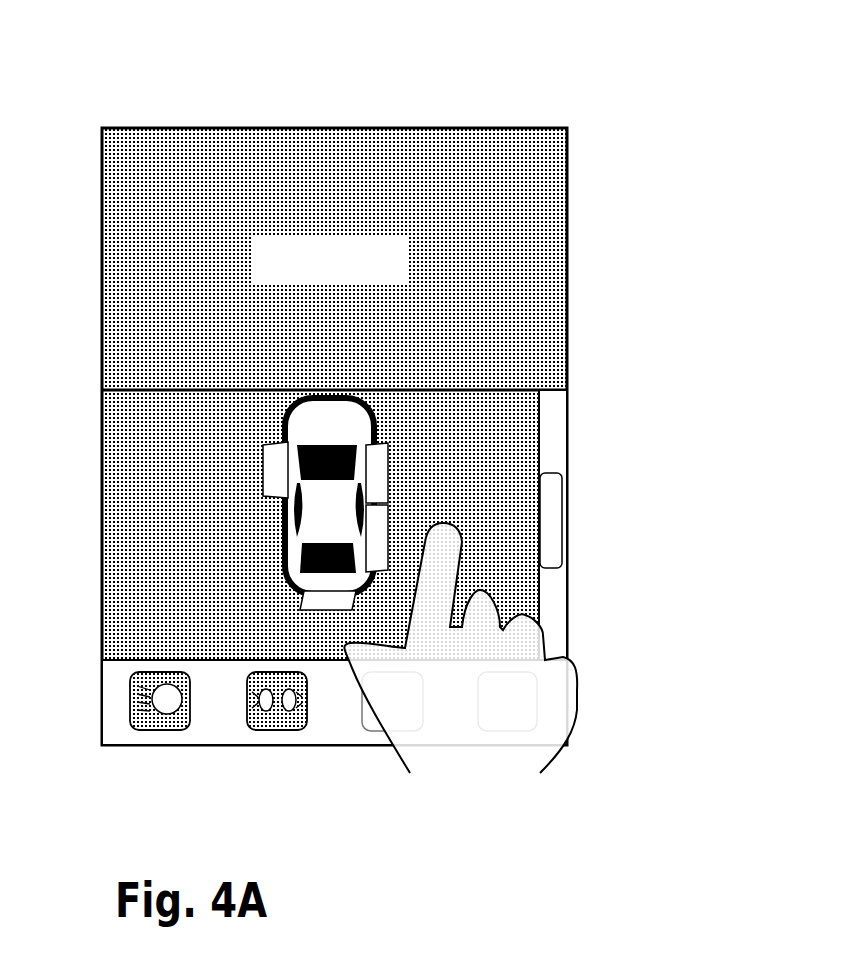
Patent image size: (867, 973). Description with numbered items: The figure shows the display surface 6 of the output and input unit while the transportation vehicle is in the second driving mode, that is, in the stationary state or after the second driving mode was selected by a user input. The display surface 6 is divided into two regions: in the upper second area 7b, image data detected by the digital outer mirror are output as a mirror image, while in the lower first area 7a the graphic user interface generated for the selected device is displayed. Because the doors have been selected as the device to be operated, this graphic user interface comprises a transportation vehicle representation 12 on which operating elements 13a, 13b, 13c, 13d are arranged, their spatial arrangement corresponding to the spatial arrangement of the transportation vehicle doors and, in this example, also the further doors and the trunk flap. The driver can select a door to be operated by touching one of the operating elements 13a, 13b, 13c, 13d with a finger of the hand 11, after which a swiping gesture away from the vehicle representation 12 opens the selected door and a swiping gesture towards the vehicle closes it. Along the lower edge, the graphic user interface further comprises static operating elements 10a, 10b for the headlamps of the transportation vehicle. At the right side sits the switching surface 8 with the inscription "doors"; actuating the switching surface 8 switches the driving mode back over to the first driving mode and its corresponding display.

The display surface 6 is at (462, 105).
The first area 7a is at (477, 412).
The second area 7b is at (215, 180).
The switching surface 8 is at (556, 558).
The static operating element 10a is at (165, 723).
The static operating element 10b is at (268, 722).
The hand 11 is at (465, 647).
The transportation vehicle representation 12 is at (323, 517).
The operating element 13a is at (272, 465).
The operating element 13b is at (379, 477).
The operating element 13c is at (375, 543).
The operating element 13d is at (323, 602).